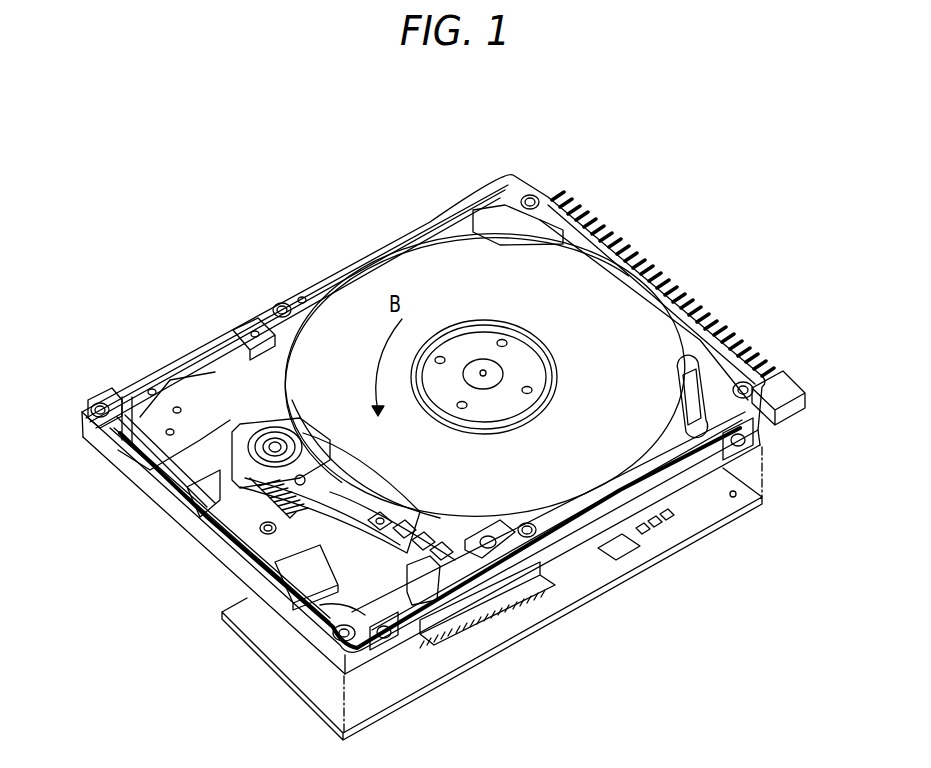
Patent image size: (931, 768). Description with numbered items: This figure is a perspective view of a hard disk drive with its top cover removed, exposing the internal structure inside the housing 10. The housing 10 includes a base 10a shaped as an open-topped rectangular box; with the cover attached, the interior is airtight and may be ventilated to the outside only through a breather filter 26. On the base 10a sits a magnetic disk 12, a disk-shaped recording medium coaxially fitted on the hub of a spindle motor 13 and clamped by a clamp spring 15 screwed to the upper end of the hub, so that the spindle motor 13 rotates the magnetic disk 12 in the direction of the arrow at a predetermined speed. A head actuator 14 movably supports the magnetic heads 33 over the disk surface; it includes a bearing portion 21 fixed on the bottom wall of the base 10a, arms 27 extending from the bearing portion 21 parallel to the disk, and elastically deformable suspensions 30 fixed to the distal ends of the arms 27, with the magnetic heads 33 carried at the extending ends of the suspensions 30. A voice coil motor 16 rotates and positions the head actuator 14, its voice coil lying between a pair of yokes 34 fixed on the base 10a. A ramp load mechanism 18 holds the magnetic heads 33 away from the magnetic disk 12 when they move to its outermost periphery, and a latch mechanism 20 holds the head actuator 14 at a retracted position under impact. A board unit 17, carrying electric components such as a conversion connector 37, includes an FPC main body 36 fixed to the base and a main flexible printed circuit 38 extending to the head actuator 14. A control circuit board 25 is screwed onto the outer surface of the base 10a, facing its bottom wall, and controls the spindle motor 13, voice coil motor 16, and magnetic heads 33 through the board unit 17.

The housing 10 is at (468, 193).
The base 10a is at (408, 577).
The magnetic disk 12 is at (410, 262).
The spindle motor 13 is at (560, 372).
The head actuator 14 is at (312, 468).
The clamp spring 15 is at (507, 328).
The voice coil motor 16 is at (185, 380).
The board unit 17 is at (258, 545).
The ramp load mechanism 18 is at (527, 567).
The latch mechanism 20 is at (238, 337).
The bearing portion 21 is at (300, 435).
The control circuit board 25 is at (587, 583).
The breather filter 26 is at (693, 413).
The arm 27 is at (370, 500).
The suspension 30 is at (420, 520).
The magnetic head 33 is at (488, 547).
The yoke 34 is at (173, 460).
The FPC main body 36 is at (328, 610).
The conversion connector 37 is at (273, 597).
The main flexible printed circuit 38 is at (348, 528).